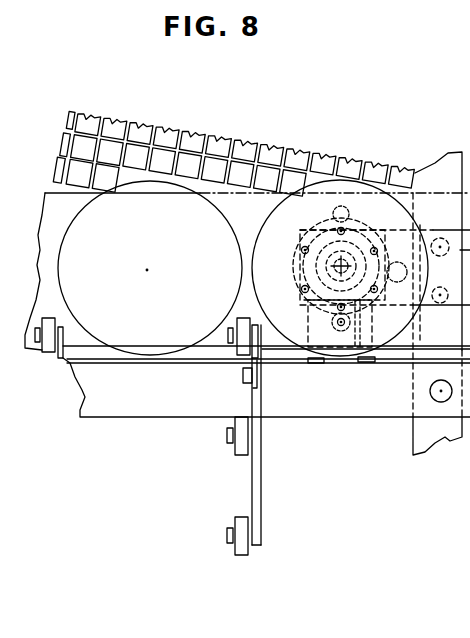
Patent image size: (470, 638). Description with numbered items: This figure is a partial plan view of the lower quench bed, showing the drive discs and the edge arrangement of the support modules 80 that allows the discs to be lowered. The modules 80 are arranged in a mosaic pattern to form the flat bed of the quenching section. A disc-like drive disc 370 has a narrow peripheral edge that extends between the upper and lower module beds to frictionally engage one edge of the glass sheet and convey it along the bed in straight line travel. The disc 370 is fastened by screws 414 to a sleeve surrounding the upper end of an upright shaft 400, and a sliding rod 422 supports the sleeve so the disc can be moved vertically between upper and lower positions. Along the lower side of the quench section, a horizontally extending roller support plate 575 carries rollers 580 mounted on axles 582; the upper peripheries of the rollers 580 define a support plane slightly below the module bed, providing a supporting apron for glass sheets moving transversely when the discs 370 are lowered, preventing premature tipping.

The modules 80 is at (178, 117).
The drive disc 370 is at (255, 233).
The upright shaft 400 is at (336, 262).
The screws 414 is at (301, 251).
The sliding rod 422 is at (357, 351).
The roller support plate 575 is at (262, 486).
The rollers 580 is at (50, 353).
The axles 582 is at (226, 437).